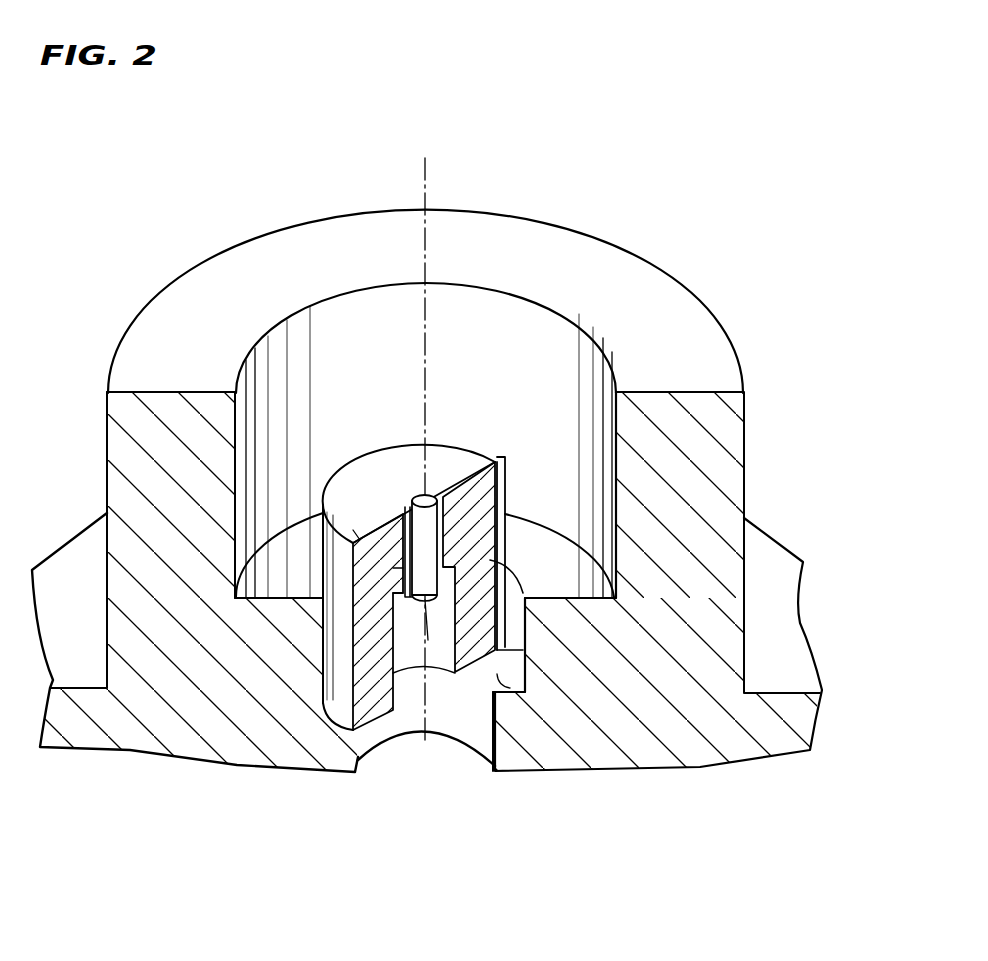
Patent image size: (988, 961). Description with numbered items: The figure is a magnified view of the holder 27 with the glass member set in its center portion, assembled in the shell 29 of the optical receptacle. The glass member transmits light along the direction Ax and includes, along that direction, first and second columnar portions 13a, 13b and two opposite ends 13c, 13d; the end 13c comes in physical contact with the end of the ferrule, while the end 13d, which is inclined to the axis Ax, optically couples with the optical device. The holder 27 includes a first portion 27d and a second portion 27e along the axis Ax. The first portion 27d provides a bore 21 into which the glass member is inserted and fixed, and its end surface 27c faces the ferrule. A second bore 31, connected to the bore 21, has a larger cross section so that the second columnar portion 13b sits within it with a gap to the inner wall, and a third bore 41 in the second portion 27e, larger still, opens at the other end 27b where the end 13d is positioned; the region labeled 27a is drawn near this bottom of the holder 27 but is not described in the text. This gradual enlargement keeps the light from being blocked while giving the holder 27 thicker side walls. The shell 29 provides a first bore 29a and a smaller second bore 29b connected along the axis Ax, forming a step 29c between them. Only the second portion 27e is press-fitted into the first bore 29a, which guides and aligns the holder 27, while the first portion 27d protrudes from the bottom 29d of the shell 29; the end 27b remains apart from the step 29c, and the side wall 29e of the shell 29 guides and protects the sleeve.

The direction (axis) Ax is at (426, 435).
The first columnar portion 13a is at (353, 535).
The second columnar portion 13b is at (400, 570).
The end 13c is at (428, 497).
The end 13d is at (428, 600).
The bore 21 is at (405, 518).
The holder 27 is at (243, 763).
The bottom hole of cup 27a is at (367, 758).
The end 27b is at (293, 770).
The end surface 27c is at (410, 452).
The first portion 27d is at (505, 507).
The second portion 27e is at (523, 590).
The shell 29 is at (157, 680).
The first bore 29a is at (523, 650).
The second bore 29b is at (415, 712).
The step 29c is at (497, 677).
The bottom 29d is at (597, 580).
The side wall 29e is at (673, 477).
The second bore 31 is at (440, 510).
The third bore 41 is at (400, 637).